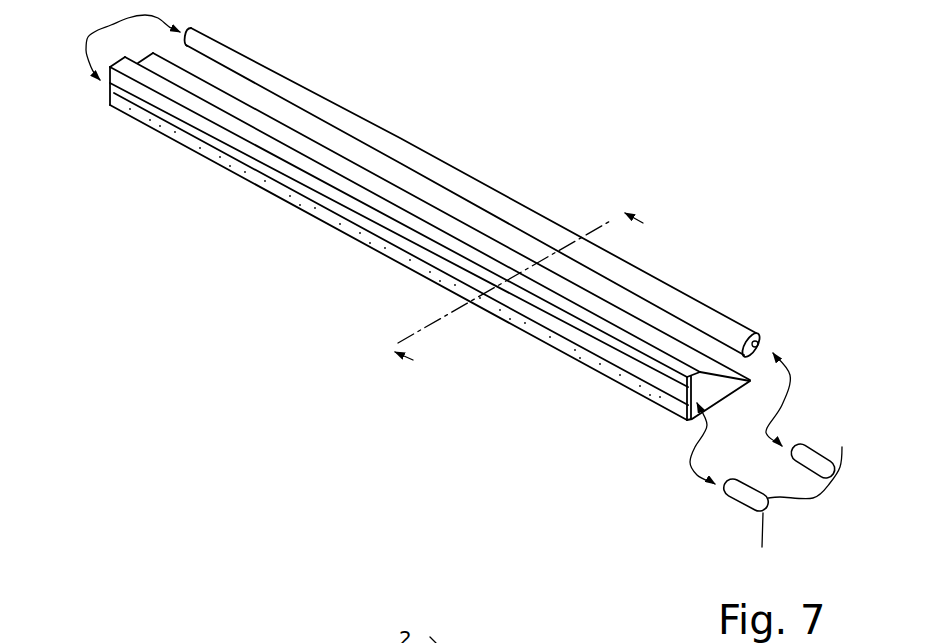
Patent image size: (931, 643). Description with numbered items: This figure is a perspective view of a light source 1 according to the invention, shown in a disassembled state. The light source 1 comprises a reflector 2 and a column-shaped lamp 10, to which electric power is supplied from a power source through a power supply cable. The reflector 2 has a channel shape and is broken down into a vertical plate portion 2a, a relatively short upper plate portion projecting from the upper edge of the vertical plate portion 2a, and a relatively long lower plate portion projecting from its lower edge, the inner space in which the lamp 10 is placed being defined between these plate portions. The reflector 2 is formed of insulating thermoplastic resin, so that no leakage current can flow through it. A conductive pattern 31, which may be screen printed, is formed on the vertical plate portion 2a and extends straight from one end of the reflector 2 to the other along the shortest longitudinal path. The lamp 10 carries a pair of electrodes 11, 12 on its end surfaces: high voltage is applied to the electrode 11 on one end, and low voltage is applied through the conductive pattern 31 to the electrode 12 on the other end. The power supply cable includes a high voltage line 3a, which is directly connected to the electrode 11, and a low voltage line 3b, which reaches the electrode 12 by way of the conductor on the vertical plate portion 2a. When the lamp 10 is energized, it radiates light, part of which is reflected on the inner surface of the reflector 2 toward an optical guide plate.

The light source 1 is at (605, 140).
The reflector 2 is at (405, 255).
The vertical plate portion 2a is at (547, 343).
The high voltage line 3a is at (810, 440).
The low voltage line 3b is at (720, 490).
The lamp 10 is at (492, 180).
The electrode 11 is at (768, 343).
The electrode 12 is at (189, 27).
The conductive pattern 31 is at (300, 191).